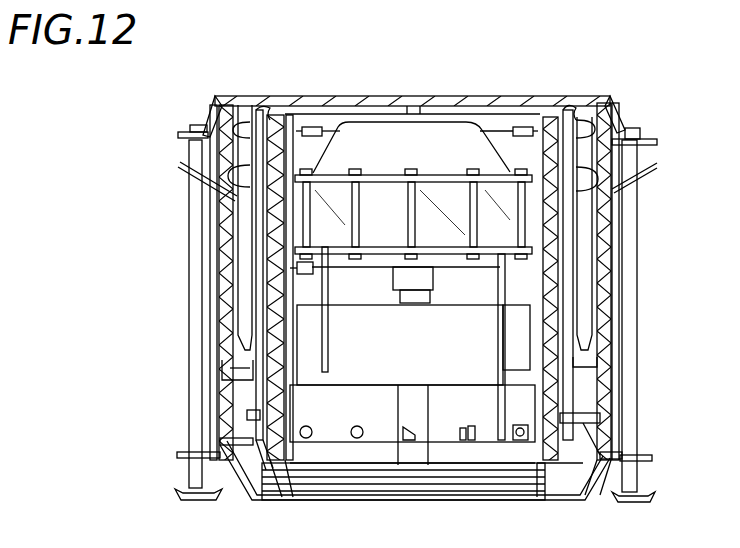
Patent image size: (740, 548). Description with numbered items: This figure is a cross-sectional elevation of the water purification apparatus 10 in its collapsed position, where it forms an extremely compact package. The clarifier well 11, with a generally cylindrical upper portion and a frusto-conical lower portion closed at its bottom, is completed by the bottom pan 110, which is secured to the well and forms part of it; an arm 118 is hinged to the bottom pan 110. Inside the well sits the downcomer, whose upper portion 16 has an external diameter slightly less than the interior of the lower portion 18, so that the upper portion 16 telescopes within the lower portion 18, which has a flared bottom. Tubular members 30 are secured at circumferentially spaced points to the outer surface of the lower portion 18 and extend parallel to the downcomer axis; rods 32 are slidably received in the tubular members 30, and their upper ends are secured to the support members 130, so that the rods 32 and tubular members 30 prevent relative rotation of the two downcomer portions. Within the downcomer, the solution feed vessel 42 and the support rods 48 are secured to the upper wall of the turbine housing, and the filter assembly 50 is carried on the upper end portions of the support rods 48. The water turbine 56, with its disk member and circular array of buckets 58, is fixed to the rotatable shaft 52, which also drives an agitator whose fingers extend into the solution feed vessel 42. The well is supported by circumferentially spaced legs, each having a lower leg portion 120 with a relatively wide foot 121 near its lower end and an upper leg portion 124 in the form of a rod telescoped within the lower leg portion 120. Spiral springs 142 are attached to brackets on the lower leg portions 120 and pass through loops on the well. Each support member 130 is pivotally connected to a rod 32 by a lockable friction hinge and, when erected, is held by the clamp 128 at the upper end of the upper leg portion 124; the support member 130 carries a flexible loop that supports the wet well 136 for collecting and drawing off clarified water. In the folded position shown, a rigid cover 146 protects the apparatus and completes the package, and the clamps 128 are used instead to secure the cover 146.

The water purification apparatus 10 is at (486, 90).
The clarifier well 11 is at (220, 326).
The upper portion of the downcomer 16 is at (287, 212).
The lower portion of the downcomer 18 is at (282, 457).
The tubular members 30 is at (262, 308).
The rods 32 is at (266, 110).
The solution feed vessel 42 is at (382, 300).
The support rods 48 is at (330, 372).
The filter assembly 50 is at (386, 122).
The rotatable shaft 52 is at (407, 402).
The water turbine 56 is at (440, 440).
The buckets 58 is at (476, 437).
The bottom pan 110 is at (268, 503).
The arm 118 is at (612, 272).
The lower leg portion 120 is at (195, 397).
The foot 121 is at (652, 495).
The upper leg portion 124 is at (640, 146).
The clamp or hand-operated set screw 128 is at (632, 130).
The support member 130 is at (247, 107).
The wet well 136 is at (240, 372).
The spiral springs 142 is at (205, 130).
The rigid cover 146 is at (598, 97).